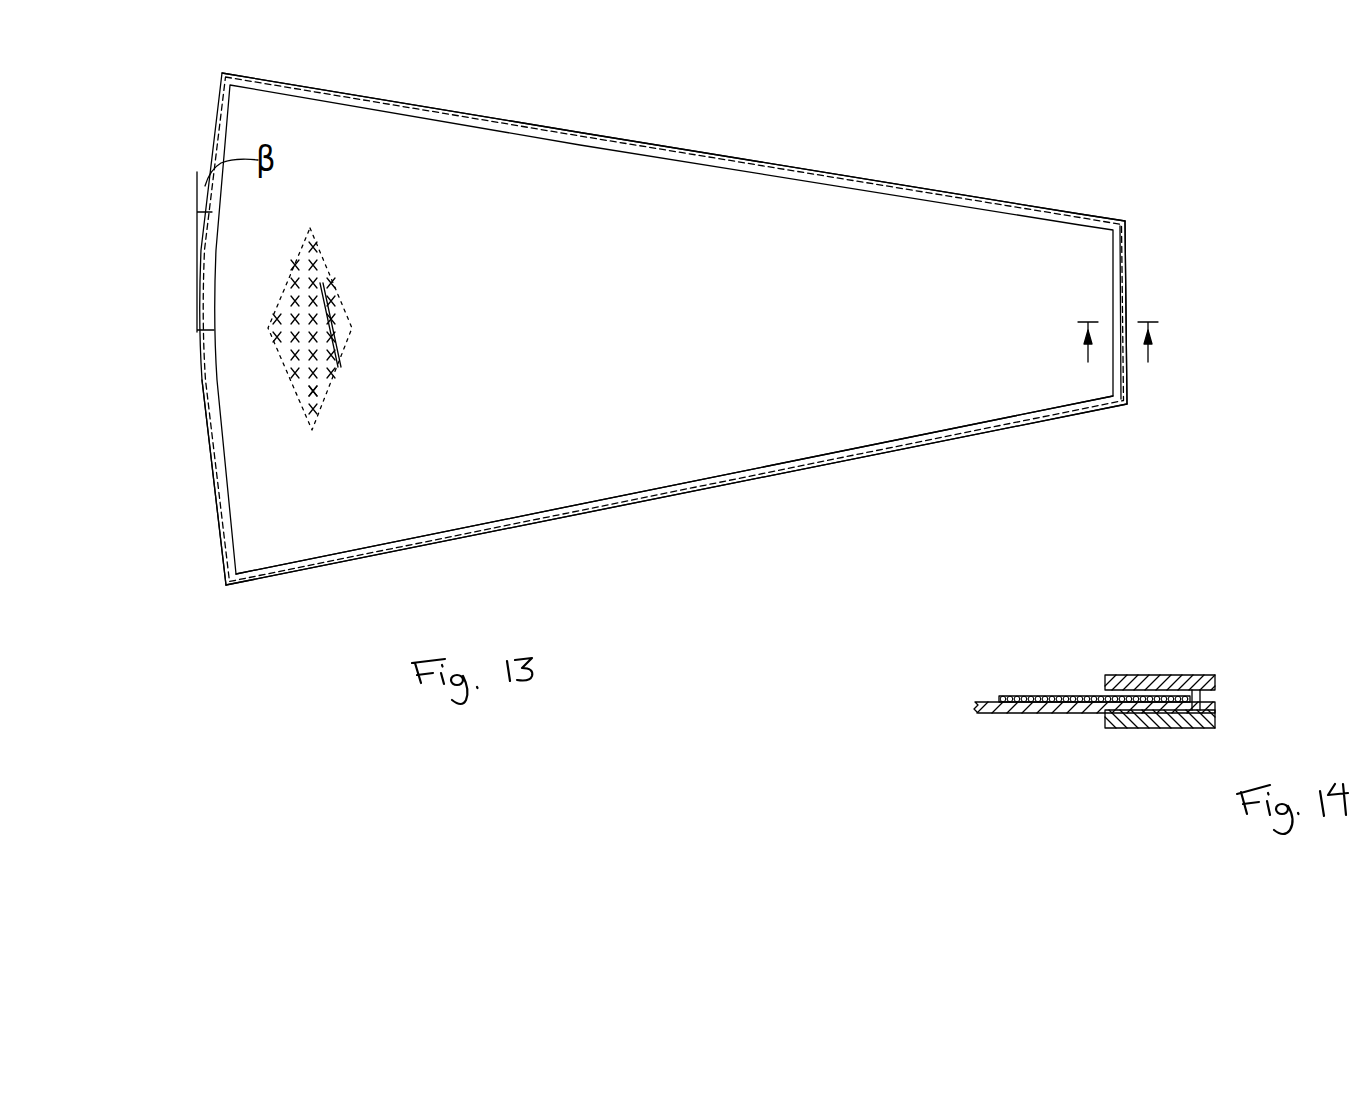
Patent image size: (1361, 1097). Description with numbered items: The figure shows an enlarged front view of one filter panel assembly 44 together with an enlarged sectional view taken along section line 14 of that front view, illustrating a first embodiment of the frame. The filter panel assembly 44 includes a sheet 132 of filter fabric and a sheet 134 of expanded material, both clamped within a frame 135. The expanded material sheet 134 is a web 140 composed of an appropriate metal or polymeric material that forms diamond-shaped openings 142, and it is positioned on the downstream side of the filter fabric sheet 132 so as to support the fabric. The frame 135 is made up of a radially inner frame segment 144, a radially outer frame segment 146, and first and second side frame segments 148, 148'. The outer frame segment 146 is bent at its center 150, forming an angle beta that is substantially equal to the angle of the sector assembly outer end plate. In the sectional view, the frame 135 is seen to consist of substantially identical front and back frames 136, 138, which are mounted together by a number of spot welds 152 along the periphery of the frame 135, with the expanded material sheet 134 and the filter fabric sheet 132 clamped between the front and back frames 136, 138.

In FIG. 13, the filter panel assembly 44 is at (1005, 158).
In FIG. 13, the sheet of filter fabric 132 is at (710, 346).
In FIG. 14, the sheet of filter fabric 132 is at (1046, 694).
In FIG. 13, the sheet of expanded material 134 is at (337, 303).
In FIG. 14, the sheet of expanded material 134 is at (1005, 715).
In FIG. 13, the frame 135 is at (929, 443).
In FIG. 14, the front frame 136 is at (1170, 675).
In FIG. 14, the back frame 138 is at (1150, 728).
In FIG. 13, the web 140 is at (345, 342).
In FIG. 13, the diamond-shaped openings 142 is at (320, 389).
In FIG. 13, the radially inner frame segment 144 is at (1128, 290).
In FIG. 13, the radially outer frame segment 146 is at (238, 490).
In FIG. 13, the first side frame segment 148 is at (673, 141).
In FIG. 13, the second side frame segment 148' is at (676, 494).
In FIG. 13, the center 150 is at (214, 330).
In FIG. 14, the spot welds 152 is at (1215, 700).
In FIG. 13, the section line 14- 14 is at (1123, 361).